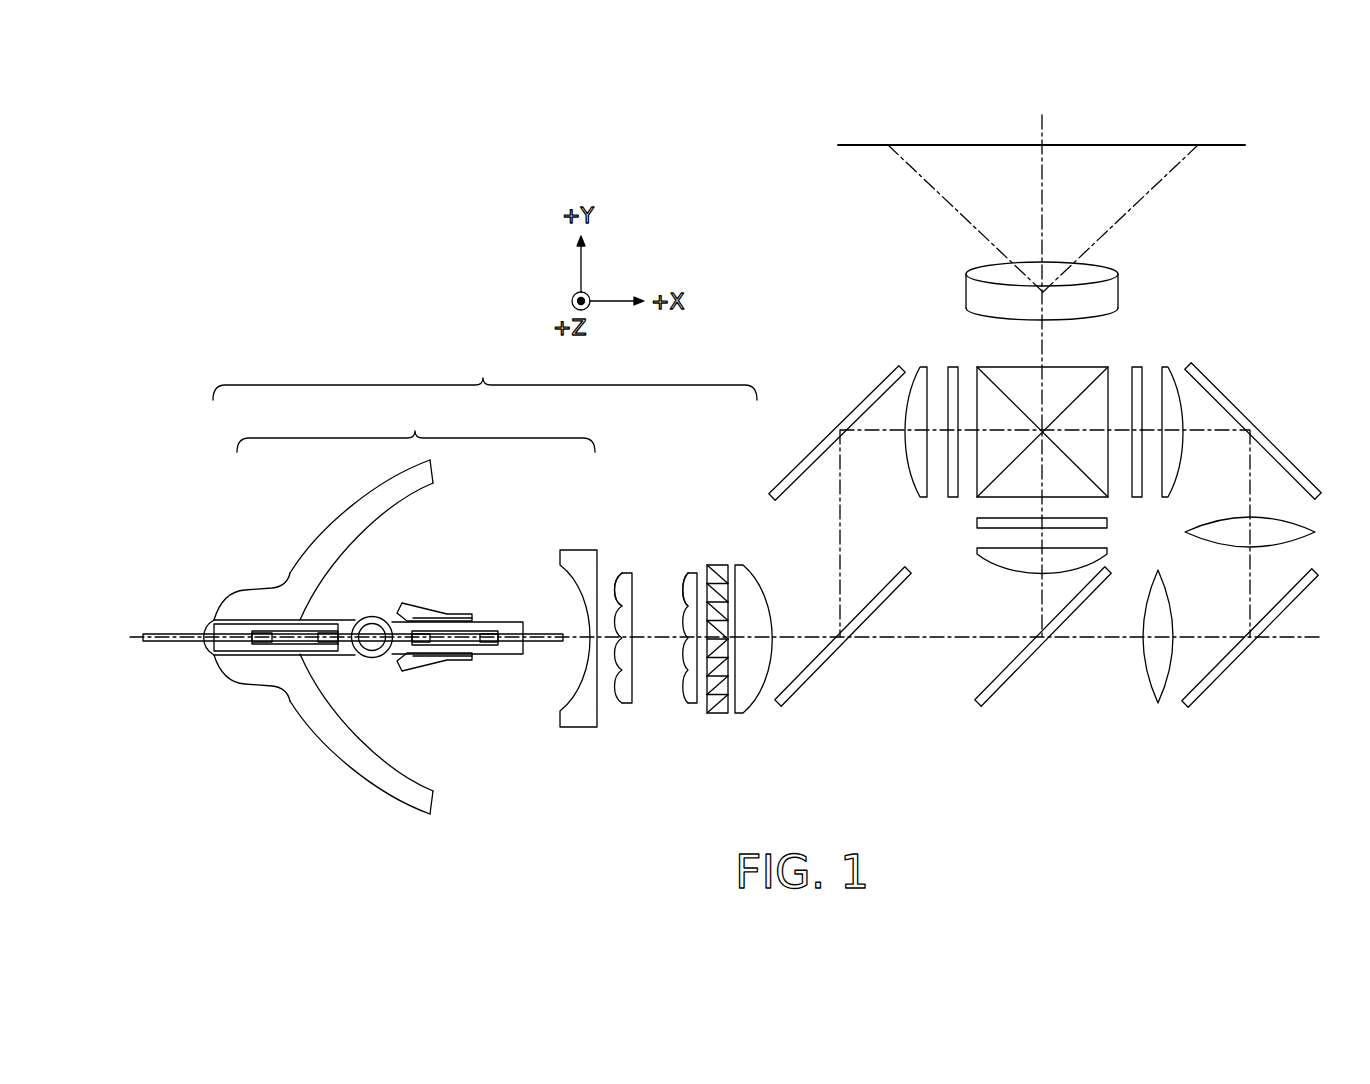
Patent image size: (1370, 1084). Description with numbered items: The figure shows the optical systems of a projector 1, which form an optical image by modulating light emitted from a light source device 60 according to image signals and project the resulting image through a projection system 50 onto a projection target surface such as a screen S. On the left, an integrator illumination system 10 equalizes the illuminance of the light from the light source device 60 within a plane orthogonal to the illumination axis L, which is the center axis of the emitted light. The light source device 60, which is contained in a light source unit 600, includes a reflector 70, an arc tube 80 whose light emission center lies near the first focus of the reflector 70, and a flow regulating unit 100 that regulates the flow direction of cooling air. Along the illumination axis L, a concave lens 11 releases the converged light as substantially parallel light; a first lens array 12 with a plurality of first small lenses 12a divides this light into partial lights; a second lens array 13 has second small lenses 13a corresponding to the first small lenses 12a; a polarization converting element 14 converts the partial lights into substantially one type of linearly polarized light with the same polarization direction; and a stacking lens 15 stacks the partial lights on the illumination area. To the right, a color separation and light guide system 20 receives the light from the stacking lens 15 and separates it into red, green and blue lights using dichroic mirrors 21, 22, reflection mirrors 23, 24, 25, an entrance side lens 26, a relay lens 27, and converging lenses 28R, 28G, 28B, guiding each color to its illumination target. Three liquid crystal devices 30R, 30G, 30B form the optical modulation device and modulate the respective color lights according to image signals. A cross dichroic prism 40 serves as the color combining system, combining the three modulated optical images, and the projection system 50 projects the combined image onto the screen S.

The projector 1 is at (745, 243).
The integrator illumination system 10 is at (485, 374).
The light source unit 600 is at (416, 427).
The light source device 60 is at (302, 797).
The reflector 70 is at (296, 519).
The arc tube 80 is at (366, 600).
The flow regulating unit 100 is at (410, 582).
The illumination axis L is at (577, 634).
The concave lens 11 is at (578, 727).
The first lens array 12 is at (625, 703).
The first small lenses 12a is at (617, 573).
The second lens array 13 is at (690, 703).
The second small lenses 13a is at (686, 573).
The polarization converting element 14 is at (715, 713).
The stacking lens 15 is at (750, 713).
The color separation and light guide system 20 is at (1056, 753).
The dichroic mirror 21 is at (811, 683).
The dichroic mirror 22 is at (1008, 690).
The reflection mirror 23 is at (807, 452).
The reflection mirror 24 is at (1222, 686).
The reflection mirror 25 is at (1270, 433).
The entrance side lens 26 is at (1150, 688).
The relay lens 27 is at (1290, 547).
The converging lens 28R is at (906, 365).
The converging lens 28G is at (1000, 572).
The converging lens 28B is at (1173, 366).
The liquid crystal device 30R is at (940, 365).
The liquid crystal device 30G is at (977, 523).
The liquid crystal device 30B is at (1139, 365).
The cross dichroic prism 40 is at (1020, 366).
The projection system 50 is at (1120, 290).
The screen S is at (1225, 148).